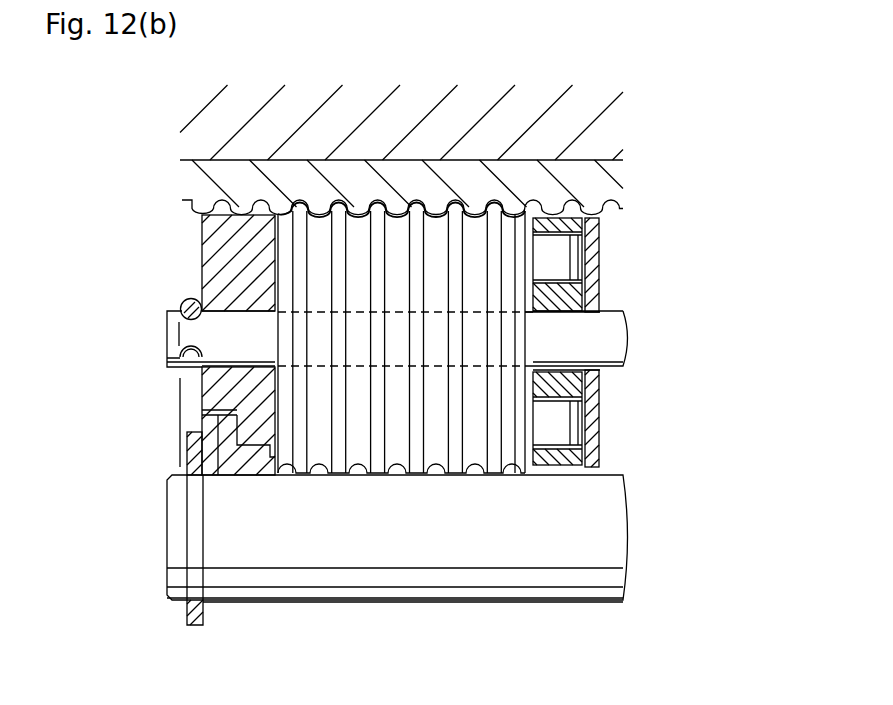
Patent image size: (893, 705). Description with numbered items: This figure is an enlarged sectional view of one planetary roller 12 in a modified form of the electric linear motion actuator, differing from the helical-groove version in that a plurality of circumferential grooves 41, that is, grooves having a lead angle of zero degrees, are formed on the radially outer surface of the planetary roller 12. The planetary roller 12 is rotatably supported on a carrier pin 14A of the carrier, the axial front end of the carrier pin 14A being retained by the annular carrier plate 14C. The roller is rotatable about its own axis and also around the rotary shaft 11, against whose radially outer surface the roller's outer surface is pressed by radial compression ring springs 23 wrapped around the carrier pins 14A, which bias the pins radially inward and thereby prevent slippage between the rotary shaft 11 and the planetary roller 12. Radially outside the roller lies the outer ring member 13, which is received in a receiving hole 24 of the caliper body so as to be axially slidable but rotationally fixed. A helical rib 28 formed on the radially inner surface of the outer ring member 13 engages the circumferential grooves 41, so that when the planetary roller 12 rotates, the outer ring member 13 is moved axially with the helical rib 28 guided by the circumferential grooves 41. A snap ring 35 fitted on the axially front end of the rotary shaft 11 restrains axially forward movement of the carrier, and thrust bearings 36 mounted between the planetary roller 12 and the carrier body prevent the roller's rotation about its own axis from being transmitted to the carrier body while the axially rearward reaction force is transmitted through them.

The rotary shaft 11 is at (166, 541).
The planetary roller 12 is at (288, 277).
The outer ring member 13 is at (200, 196).
The carrier pin 14A is at (613, 329).
The carrier plate 14C is at (212, 397).
The radial compression ring spring 23 is at (181, 308).
The receiving hole 24 is at (292, 172).
The helical rib 28 is at (360, 220).
The snap ring 35 is at (196, 456).
The thrust bearing 36 is at (557, 263).
The circumferential groove 41 is at (440, 228).